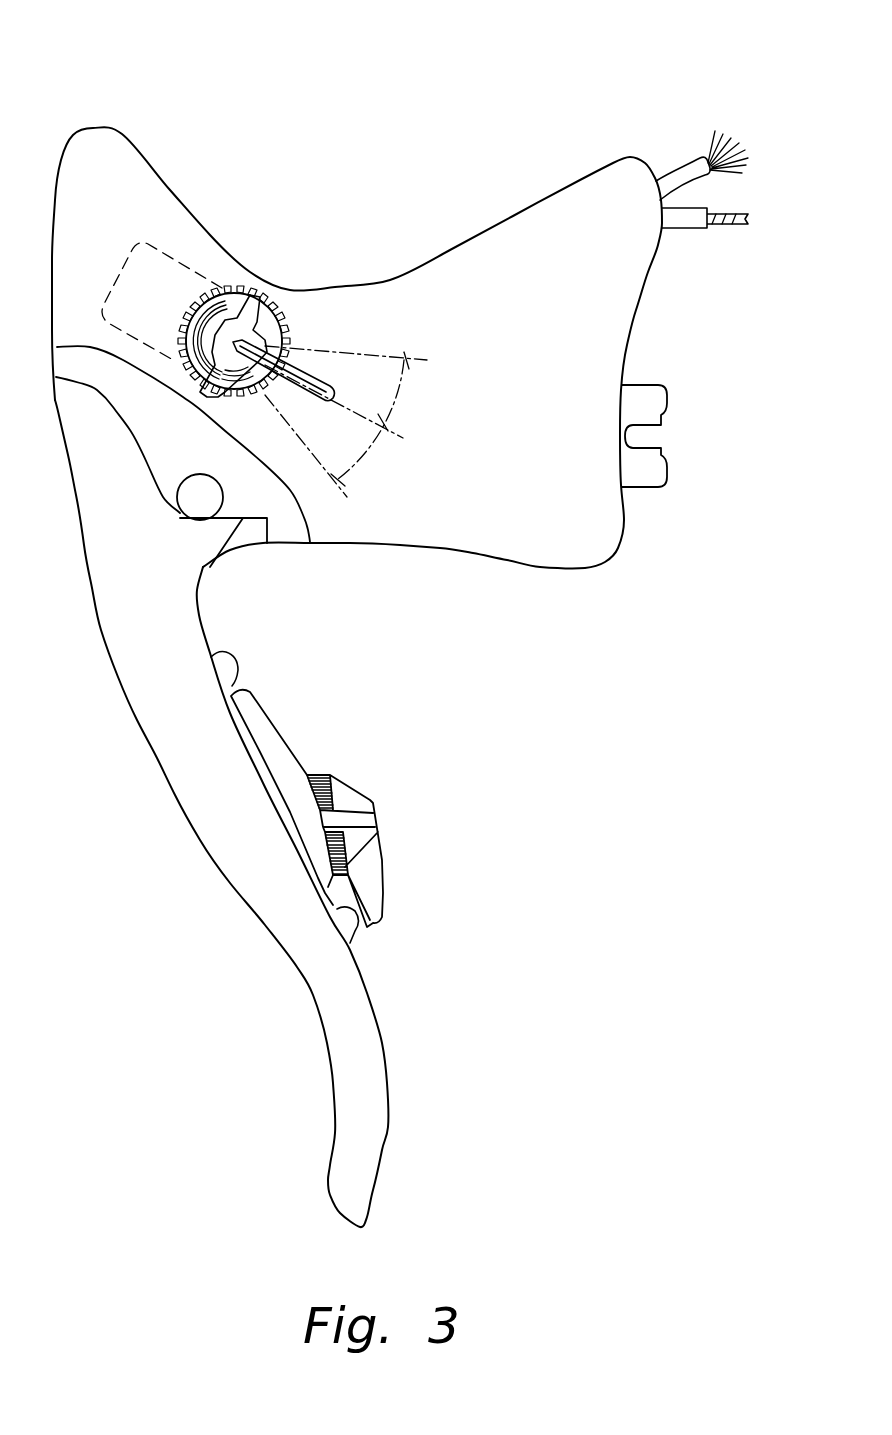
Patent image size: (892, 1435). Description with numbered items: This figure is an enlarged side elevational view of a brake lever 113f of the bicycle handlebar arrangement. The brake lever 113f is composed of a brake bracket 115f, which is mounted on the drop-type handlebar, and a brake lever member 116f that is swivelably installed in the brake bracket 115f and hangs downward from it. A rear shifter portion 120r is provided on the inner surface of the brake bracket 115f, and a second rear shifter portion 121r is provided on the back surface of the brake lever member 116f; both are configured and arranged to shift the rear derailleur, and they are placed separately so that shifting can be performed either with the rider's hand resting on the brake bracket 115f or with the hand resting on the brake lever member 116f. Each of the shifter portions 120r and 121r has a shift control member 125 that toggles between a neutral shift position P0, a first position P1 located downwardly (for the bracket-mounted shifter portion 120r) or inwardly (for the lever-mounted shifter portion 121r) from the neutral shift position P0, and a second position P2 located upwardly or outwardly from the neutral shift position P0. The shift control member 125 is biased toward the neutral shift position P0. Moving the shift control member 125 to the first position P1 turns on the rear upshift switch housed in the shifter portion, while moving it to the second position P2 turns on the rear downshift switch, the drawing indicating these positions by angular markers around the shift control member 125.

The brake lever 113f is at (330, 203).
The brake bracket 115f is at (527, 247).
The brake lever member 116f is at (233, 847).
The rear shifter portion 120r is at (283, 303).
The rear shifter portion 121r is at (400, 790).
The shift control member 125 is at (325, 385).
The neutral shift position P0 is at (363, 420).
The first position P1 is at (333, 466).
The second position P2 is at (381, 412).